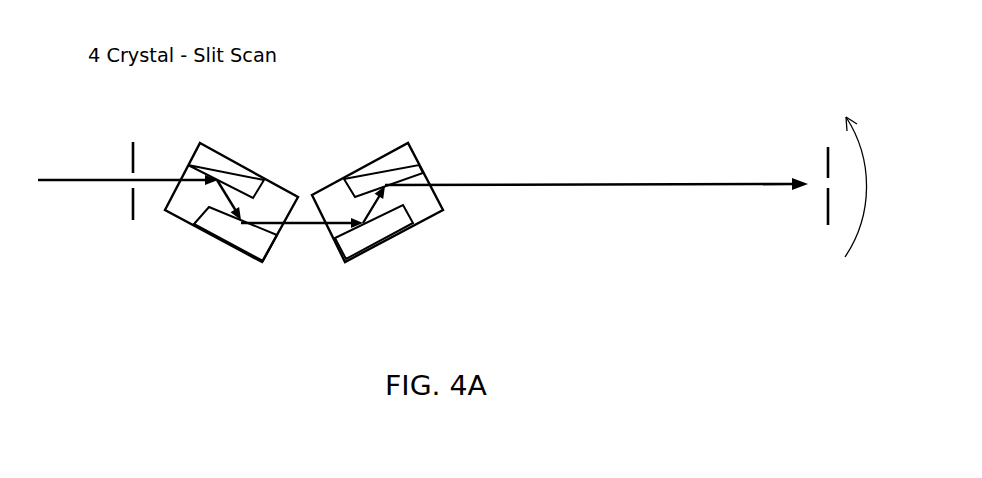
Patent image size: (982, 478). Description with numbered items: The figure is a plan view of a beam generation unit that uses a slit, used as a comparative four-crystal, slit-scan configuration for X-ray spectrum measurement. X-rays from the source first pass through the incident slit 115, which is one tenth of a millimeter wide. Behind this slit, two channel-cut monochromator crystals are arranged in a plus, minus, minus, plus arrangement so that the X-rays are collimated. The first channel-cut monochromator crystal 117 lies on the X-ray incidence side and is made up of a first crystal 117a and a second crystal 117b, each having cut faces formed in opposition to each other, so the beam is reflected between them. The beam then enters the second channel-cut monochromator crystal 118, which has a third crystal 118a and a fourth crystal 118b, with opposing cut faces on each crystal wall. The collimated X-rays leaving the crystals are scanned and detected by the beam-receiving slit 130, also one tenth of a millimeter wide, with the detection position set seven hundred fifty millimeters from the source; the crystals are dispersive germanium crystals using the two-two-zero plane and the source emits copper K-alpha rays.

The incident slit 115 is at (133, 223).
The first channel-cut monochromator crystal 117 is at (221, 194).
The first crystal 117a is at (194, 152).
The second crystal 117b is at (230, 247).
The second channel-cut monochromator crystal 118 is at (387, 207).
The third crystal 118a is at (372, 249).
The fourth crystal 118b is at (414, 152).
The beam-receiving slit 130 is at (828, 227).